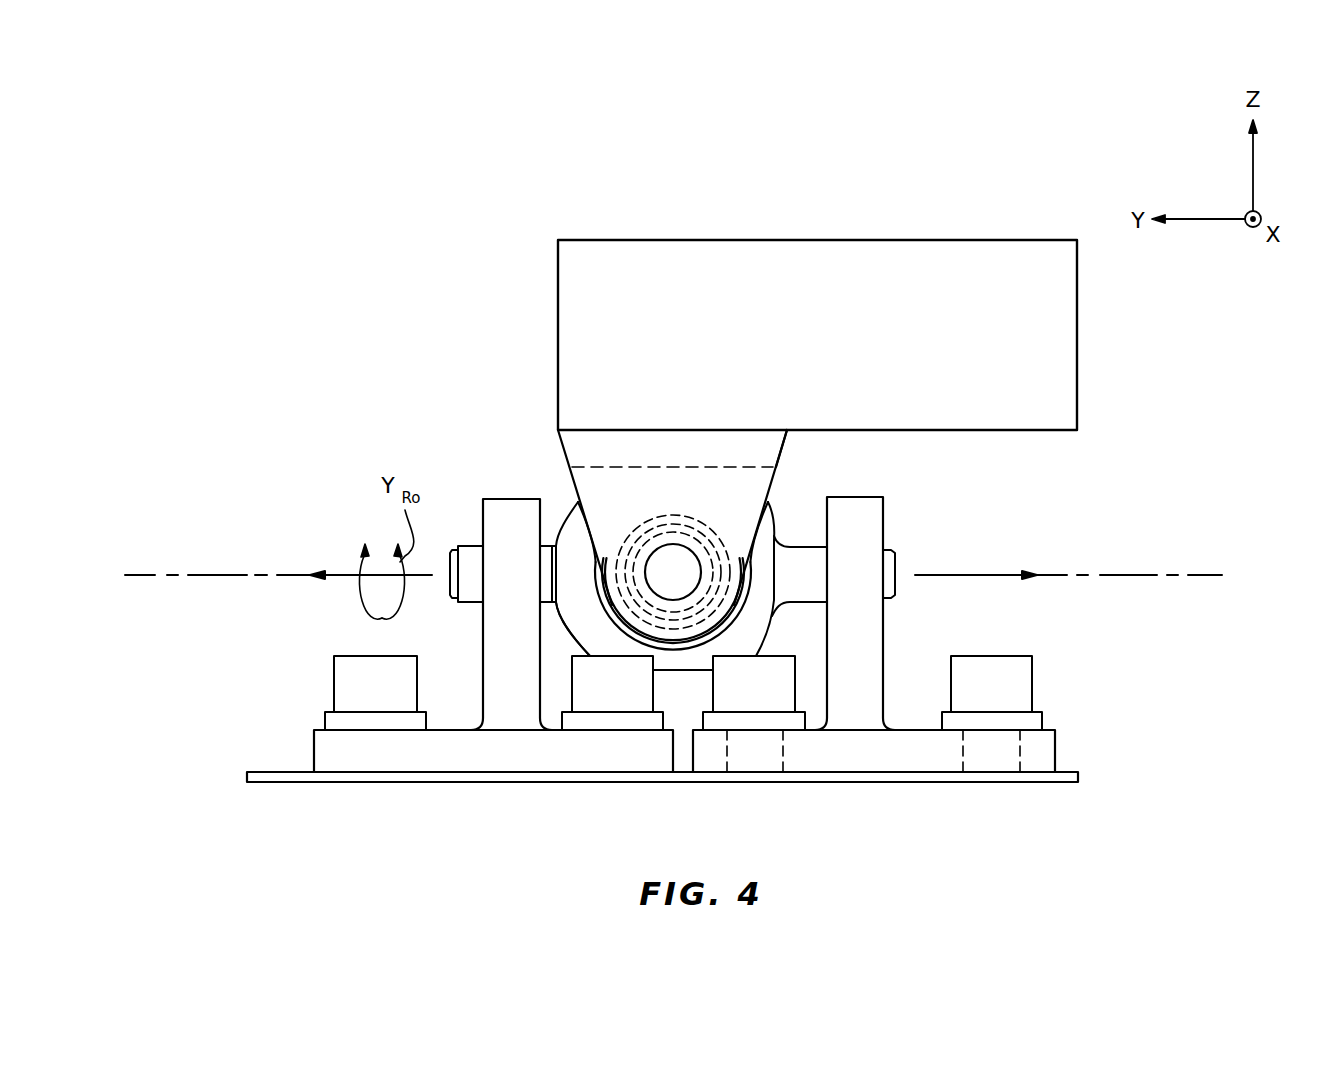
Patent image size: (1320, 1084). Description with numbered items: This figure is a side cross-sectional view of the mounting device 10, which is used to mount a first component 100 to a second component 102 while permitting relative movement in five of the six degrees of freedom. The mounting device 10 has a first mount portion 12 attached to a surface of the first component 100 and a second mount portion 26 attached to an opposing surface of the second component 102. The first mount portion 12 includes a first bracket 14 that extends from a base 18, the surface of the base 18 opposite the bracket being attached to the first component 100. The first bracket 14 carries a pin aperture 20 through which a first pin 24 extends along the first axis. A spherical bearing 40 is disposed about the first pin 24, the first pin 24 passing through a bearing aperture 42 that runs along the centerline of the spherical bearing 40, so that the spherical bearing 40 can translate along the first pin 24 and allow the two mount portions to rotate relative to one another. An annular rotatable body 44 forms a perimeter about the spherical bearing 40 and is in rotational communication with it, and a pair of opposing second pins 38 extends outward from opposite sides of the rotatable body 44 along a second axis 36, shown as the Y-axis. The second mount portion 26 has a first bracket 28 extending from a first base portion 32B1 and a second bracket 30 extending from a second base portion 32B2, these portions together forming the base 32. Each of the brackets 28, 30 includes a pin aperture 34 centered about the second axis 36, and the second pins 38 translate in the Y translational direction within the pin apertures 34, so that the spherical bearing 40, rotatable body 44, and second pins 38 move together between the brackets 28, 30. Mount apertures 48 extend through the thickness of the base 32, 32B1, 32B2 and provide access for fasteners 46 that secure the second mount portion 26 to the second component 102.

The mounting device 10 is at (397, 304).
The first mount portion 12 is at (541, 446).
The first bracket 14 is at (697, 490).
The base 18 is at (768, 440).
The pin aperture 20 is at (697, 556).
The first pin 24 is at (660, 586).
The second mount portion 26 is at (960, 613).
The first bracket 28 is at (868, 628).
The second bracket 30 is at (495, 655).
The base 32 is at (686, 781).
The first base portion 32B1 is at (905, 750).
The second base portion 32B2 is at (430, 753).
The pin aperture 34 is at (474, 538).
The second axis 36 is at (1212, 575).
The second pins 38 is at (549, 560).
The spherical bearing 40 is at (730, 608).
The bearing aperture 42 is at (650, 592).
The rotatable body 44 is at (590, 620).
The fasteners 46 is at (1023, 680).
The mount apertures 48 is at (1006, 764).
The first component 100 is at (828, 247).
The second component 102 is at (1078, 777).